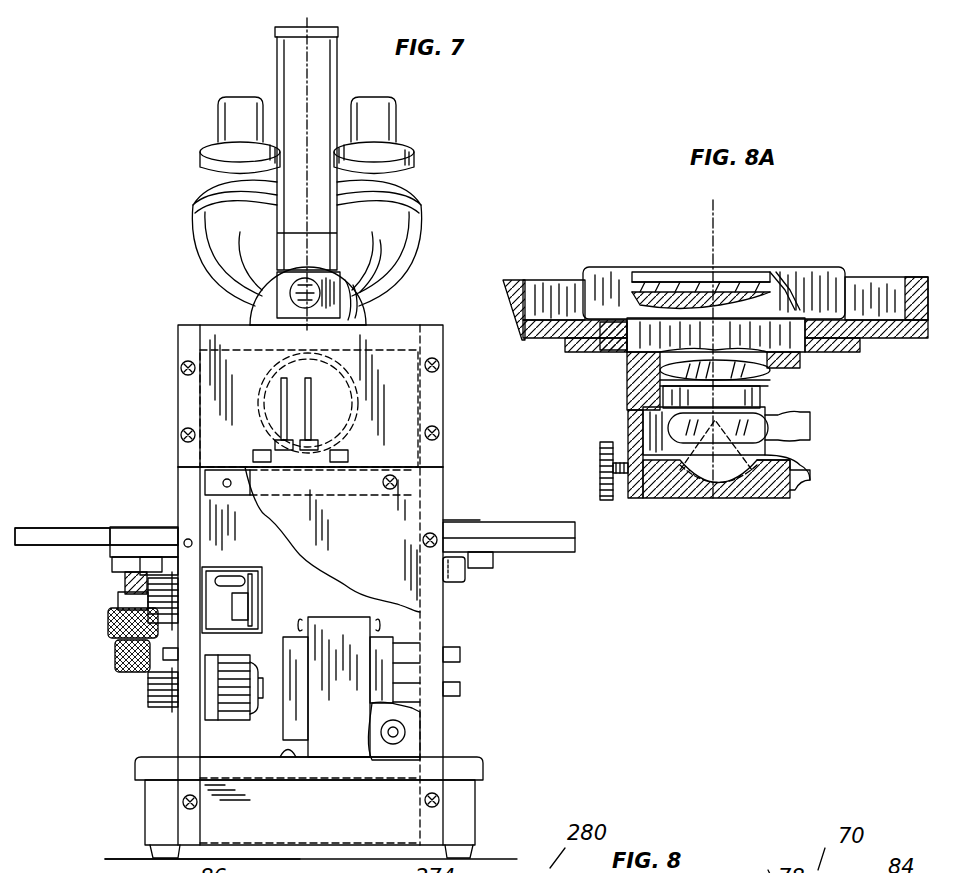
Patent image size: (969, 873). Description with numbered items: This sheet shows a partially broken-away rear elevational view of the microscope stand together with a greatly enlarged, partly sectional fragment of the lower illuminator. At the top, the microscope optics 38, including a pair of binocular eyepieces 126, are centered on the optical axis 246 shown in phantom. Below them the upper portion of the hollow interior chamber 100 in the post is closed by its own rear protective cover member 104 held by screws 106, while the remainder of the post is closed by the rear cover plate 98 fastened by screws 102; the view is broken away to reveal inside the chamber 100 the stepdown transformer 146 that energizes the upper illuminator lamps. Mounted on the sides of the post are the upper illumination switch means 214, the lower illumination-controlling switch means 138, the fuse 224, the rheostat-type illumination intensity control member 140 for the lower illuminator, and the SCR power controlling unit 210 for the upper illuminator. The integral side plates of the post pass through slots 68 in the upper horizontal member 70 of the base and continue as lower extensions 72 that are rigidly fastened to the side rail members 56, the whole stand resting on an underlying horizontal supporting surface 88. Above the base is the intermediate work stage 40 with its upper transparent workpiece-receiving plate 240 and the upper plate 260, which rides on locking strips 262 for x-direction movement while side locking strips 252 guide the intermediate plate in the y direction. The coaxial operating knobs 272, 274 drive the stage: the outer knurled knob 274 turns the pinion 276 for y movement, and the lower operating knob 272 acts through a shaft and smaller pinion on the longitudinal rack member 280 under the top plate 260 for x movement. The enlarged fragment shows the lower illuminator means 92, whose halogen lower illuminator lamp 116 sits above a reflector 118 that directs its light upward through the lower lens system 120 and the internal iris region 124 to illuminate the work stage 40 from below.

In FIG. 7, the microscope optics 38 is at (425, 155).
In FIG. 7, the optical axis 246 is at (300, 66).
In FIG. 7, the binocular eyepieces 126 is at (222, 103).
In FIG. 7, the rear protective cover member 104 is at (395, 408).
In FIG. 7, the screws 106 is at (445, 352).
In FIG. 7, the rear cover plate 98 is at (425, 500).
In FIG. 7, the hollow interior chamber 100 is at (240, 545).
In FIG. 7, the longitudinal rack member 280 is at (33, 527).
In FIG. 7, the upper plate 260 is at (130, 527).
In FIG. 7, the locking strips 262 is at (118, 549).
In FIG. 7, the locking strip 252 is at (112, 571).
In FIG. 7, the pinion 276 is at (120, 593).
In FIG. 7, the outer knurled knob 274 is at (108, 623).
In FIG. 7, the lower operating knob 272 is at (113, 653).
In FIG. 7, the illumination intensity control member 140 is at (145, 690).
In FIG. 7, the adjustable SCR power controlling unit 210 is at (182, 590).
In FIG. 7, the upper transparent workpiece-receiving plate 240 is at (483, 521).
In FIG. 7, the screws 102 is at (443, 523).
In FIG. 7, the fuse 224 is at (465, 583).
In FIG. 7, the stepdown transformer 146 is at (396, 637).
In FIG. 7, the upper illumination switch means 214 is at (462, 654).
In FIG. 7, the illumination-controlling switch means 138 is at (462, 688).
In FIG. 7, the slots 68 is at (178, 757).
In FIG. 7, the upper horizontal member 70 is at (140, 760).
In FIG. 7, the side rail members 56 is at (145, 798).
In FIG. 7, the lower extensions 72 is at (190, 818).
In FIG. 7, the horizontal supporting surface 88 is at (490, 858).
In FIG. 7, the intermediate work stage 40 is at (100, 522).
In FIG. 8A, the lower illuminator means 92 is at (718, 506).
In FIG. 8A, the lower lens system 120 is at (760, 262).
In FIG. 8A, the internal iris region 124 is at (695, 262).
In FIG. 8A, the lower illuminator lamp 116 is at (772, 416).
In FIG. 8A, the reflector 118 is at (745, 500).